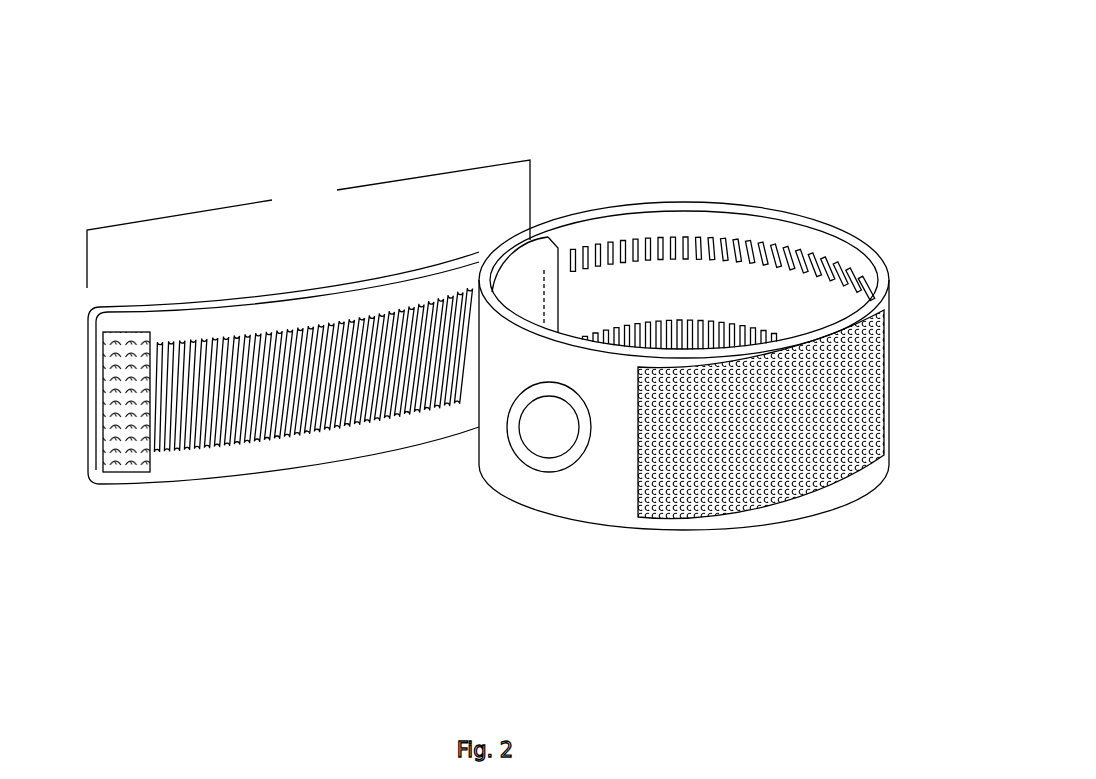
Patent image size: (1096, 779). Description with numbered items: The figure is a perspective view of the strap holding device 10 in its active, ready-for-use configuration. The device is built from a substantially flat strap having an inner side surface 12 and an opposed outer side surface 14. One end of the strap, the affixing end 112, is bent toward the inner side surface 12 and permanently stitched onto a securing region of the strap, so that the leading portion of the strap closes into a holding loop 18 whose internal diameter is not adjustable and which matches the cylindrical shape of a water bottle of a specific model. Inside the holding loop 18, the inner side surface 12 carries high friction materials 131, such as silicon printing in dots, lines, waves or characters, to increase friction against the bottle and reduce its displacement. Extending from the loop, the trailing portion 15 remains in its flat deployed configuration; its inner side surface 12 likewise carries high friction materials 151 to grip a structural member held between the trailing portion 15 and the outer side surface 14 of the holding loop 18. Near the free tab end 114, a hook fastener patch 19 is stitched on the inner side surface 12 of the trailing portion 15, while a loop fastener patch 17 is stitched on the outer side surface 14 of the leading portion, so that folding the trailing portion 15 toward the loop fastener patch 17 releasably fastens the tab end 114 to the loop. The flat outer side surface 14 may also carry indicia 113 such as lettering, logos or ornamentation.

The strap holding device 10 is at (793, 88).
The inner side surface 12 is at (353, 452).
The outer side surface 14 is at (605, 452).
The trailing portion 15 is at (308, 366).
The high friction materials 151 is at (260, 448).
The loop fastener patch 17 is at (818, 473).
The holding loop 18 is at (728, 300).
The hook fastener patch 19 is at (127, 442).
The affixing end 112 is at (547, 257).
The indicia 113 is at (536, 435).
The free tab end 114 is at (88, 392).
The high friction materials 131 is at (687, 233).